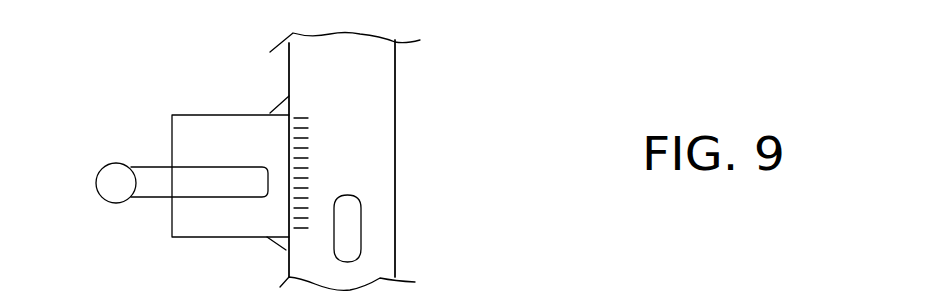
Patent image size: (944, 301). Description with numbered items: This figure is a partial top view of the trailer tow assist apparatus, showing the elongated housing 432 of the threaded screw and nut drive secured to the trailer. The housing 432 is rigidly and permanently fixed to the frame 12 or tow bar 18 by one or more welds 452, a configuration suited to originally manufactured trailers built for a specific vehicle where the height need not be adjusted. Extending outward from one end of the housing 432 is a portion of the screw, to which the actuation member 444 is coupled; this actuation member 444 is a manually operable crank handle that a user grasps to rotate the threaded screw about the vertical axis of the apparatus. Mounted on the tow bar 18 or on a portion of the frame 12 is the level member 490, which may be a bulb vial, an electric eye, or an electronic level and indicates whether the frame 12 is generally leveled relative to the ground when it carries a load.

The frame 12 is at (383, 65).
The tow bar 18 is at (383, 65).
The housing 432 is at (206, 115).
The actuation member 444 is at (143, 198).
The welds 452 is at (278, 247).
The level member 490 is at (361, 230).